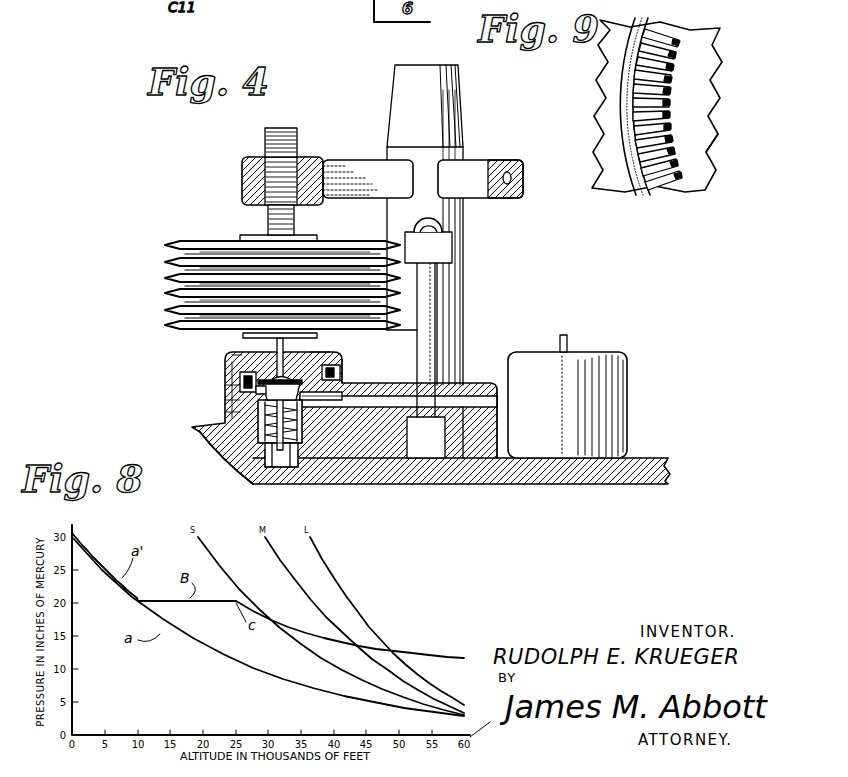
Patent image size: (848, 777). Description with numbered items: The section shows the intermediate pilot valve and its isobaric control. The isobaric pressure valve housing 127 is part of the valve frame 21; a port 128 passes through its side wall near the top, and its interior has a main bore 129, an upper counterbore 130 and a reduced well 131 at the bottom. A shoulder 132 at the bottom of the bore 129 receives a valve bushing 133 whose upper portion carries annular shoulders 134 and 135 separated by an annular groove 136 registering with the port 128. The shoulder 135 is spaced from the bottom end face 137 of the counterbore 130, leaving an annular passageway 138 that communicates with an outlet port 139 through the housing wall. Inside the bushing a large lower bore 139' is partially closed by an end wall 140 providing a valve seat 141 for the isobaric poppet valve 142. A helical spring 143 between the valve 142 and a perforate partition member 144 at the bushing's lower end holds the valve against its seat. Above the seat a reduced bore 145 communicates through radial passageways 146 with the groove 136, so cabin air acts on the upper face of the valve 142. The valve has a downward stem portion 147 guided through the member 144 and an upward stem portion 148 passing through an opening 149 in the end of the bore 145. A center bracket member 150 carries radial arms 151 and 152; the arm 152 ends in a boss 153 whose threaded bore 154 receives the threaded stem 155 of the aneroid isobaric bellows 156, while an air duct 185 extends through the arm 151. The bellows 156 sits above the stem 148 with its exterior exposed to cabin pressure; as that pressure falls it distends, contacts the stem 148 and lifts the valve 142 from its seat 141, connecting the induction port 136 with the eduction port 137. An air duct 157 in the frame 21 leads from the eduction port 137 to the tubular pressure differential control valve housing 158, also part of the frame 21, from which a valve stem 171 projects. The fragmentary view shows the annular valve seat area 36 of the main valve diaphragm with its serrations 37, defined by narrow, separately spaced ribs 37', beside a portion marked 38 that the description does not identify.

In FIG. 4, the valve frame 21 is at (185, 430).
In FIG. 4, the isobaric pressure valve housing 127 is at (318, 456).
In FIG. 4, the port 128 is at (320, 353).
In FIG. 4, the main bore 129 is at (225, 414).
In FIG. 4, the upper counterbore 130 is at (342, 380).
In FIG. 4, the well 131 is at (268, 444).
In FIG. 4, the shoulder 132 is at (262, 462).
In FIG. 4, the valve bushing 133 is at (302, 462).
In FIG. 4, the annular shoulder 134 is at (340, 370).
In FIG. 4, the annular shoulder 135 is at (225, 386).
In FIG. 4, the annular groove 136 is at (225, 355).
In FIG. 4, the bottom end face of counterbore 137 is at (225, 402).
In FIG. 4, the annular passageway 138 is at (312, 400).
In FIG. 4, the outlet port 139 is at (341, 408).
In FIG. 4, the channel 139' is at (241, 454).
In FIG. 4, the end wall 140 is at (232, 372).
In FIG. 4, the valve seat 141 is at (240, 380).
In FIG. 4, the isobaric poppet valve 142 is at (256, 390).
In FIG. 4, the helical spring 143 is at (292, 468).
In FIG. 4, the perforate partition member 144 is at (257, 470).
In FIG. 4, the bore 145 is at (344, 356).
In FIG. 4, the radial passageways 146 is at (258, 380).
In FIG. 4, the stem portion 147 is at (279, 444).
In FIG. 4, the stem portion 148 is at (276, 378).
In FIG. 4, the opening 149 is at (284, 352).
In FIG. 4, the center bracket member 150 is at (460, 111).
In FIG. 4, the radial arm 151 is at (496, 160).
In FIG. 4, the radial arm 152 is at (355, 156).
In FIG. 4, the boss 153 is at (250, 190).
In FIG. 4, the threaded bore 154 is at (265, 170).
In FIG. 4, the threaded stem 155 is at (265, 136).
In FIG. 4, the isobaric bellows 156 is at (177, 242).
In FIG. 4, the air duct 157 is at (472, 392).
In FIG. 4, the pressure differential control valve housing 158 is at (628, 392).
In FIG. 4, the valve stem 171 is at (568, 340).
In FIG. 4, the air duct 185 is at (523, 178).
In FIG. 9, the annular valve seat area 36 is at (640, 82).
In FIG. 9, the serrations 37 is at (689, 109).
In FIG. 9, the ribs 37' is at (705, 109).
In FIG. 9, the insulating plate 38 is at (695, 154).